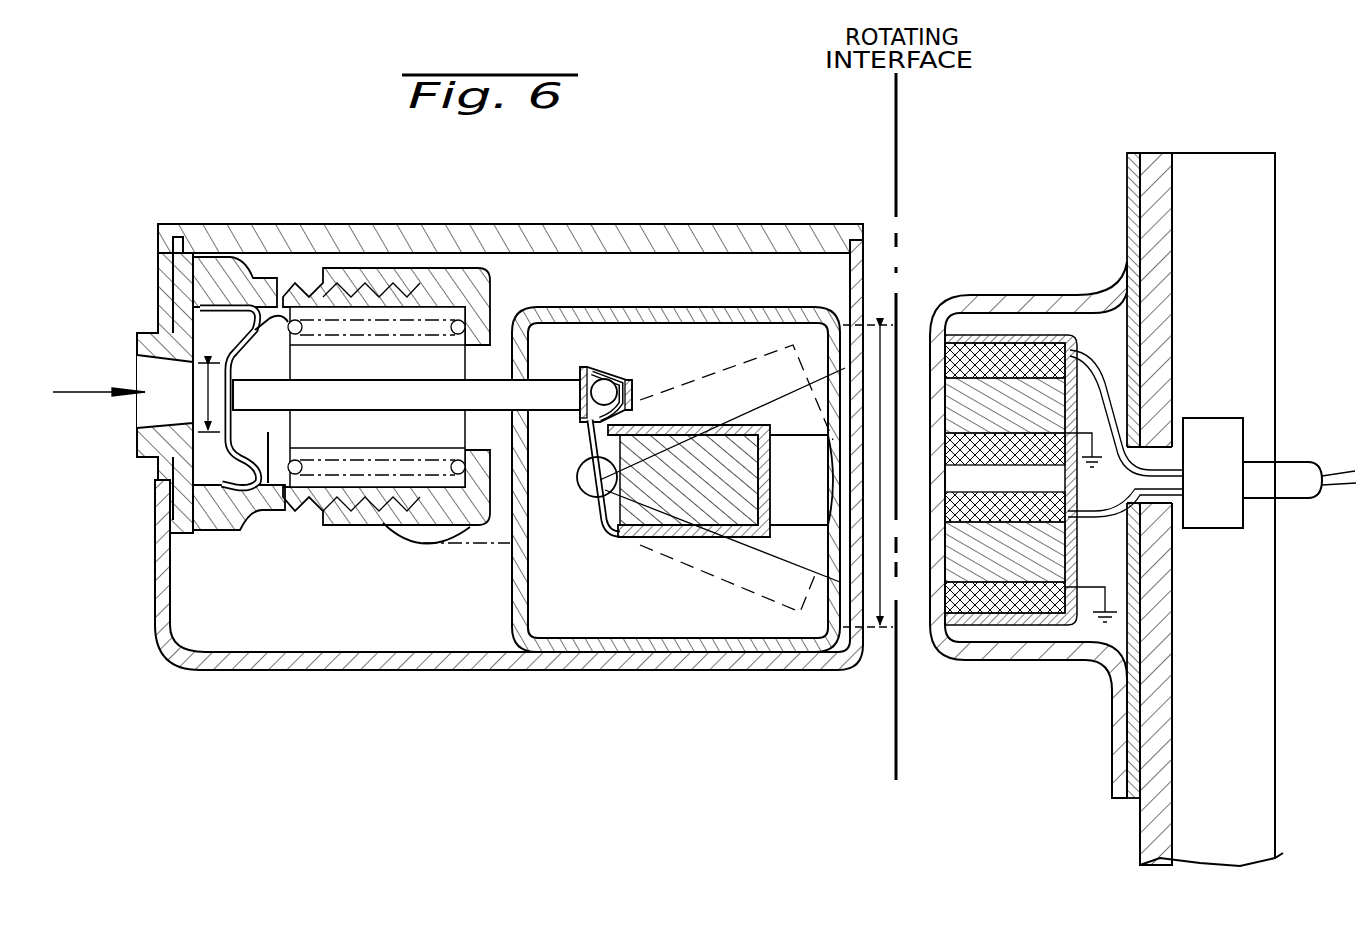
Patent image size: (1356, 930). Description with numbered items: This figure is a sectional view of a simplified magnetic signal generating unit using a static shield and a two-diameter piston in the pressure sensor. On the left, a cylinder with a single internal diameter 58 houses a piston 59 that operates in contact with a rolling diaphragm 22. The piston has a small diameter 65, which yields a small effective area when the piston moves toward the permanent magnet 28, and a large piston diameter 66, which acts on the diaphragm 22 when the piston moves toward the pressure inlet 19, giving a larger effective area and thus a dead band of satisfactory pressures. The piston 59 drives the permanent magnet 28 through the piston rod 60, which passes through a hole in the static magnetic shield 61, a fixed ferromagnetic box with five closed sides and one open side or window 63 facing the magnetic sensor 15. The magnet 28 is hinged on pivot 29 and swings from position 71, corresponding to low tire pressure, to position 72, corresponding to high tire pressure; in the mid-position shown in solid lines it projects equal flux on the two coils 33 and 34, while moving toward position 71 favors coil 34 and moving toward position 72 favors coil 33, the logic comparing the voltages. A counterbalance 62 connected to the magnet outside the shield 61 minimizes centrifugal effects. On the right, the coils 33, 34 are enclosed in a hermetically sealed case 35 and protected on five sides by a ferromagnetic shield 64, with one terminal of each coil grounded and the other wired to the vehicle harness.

The magnetic sensor 15 is at (710, 509).
The fluid inlet 19 is at (90, 390).
The rolling diaphragm 22 is at (258, 464).
The permanent magnet 28 is at (790, 527).
The pivot 29 is at (583, 495).
The coil 33 is at (1050, 563).
The coil 34 is at (1057, 397).
The hermetically sealed case 35 is at (970, 294).
The single internal diameter 58 is at (340, 310).
The piston 59 is at (265, 485).
The piston rod 60 is at (548, 410).
The static magnetic shield 61 is at (620, 307).
The counterbalance 62 is at (425, 547).
The window 63 is at (895, 387).
The ferromagnetic shield 64 is at (1023, 334).
The small diameter 65 is at (202, 389).
The large piston diameter 66 is at (262, 333).
The position 71 is at (802, 370).
The position 72 is at (813, 587).